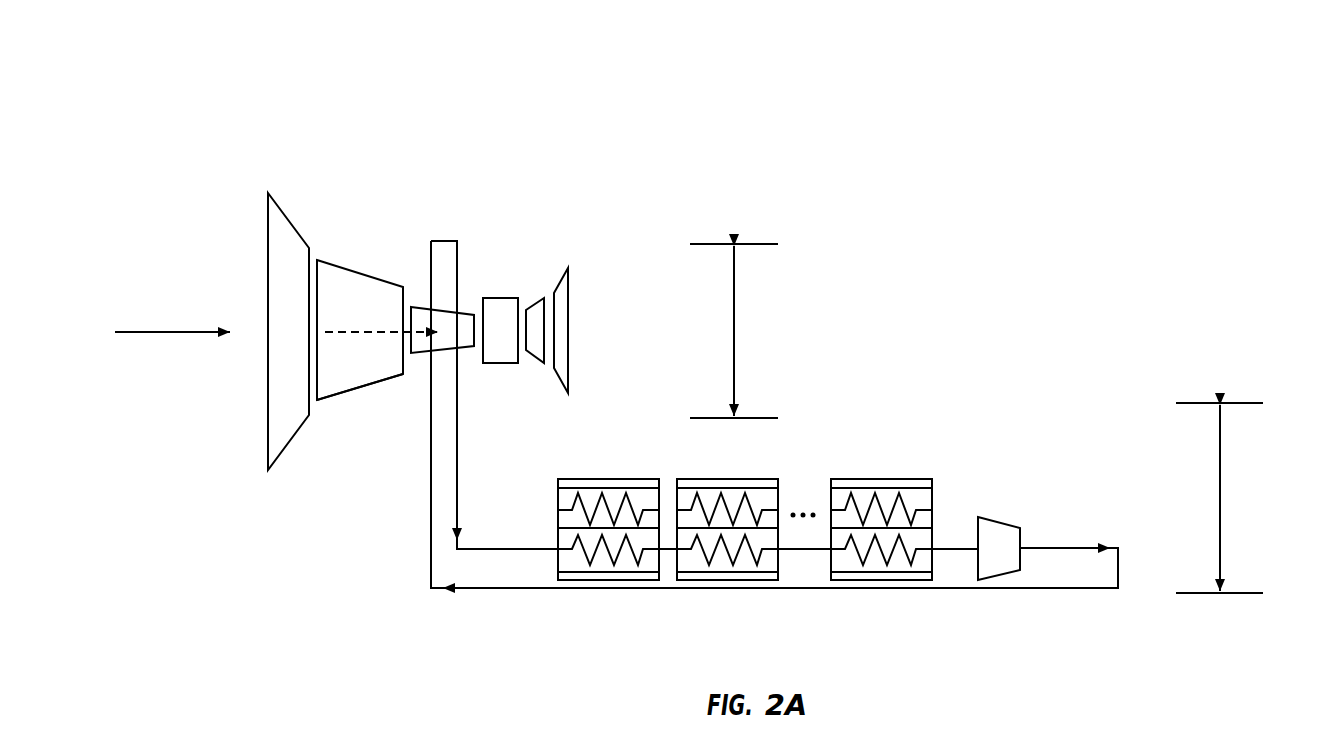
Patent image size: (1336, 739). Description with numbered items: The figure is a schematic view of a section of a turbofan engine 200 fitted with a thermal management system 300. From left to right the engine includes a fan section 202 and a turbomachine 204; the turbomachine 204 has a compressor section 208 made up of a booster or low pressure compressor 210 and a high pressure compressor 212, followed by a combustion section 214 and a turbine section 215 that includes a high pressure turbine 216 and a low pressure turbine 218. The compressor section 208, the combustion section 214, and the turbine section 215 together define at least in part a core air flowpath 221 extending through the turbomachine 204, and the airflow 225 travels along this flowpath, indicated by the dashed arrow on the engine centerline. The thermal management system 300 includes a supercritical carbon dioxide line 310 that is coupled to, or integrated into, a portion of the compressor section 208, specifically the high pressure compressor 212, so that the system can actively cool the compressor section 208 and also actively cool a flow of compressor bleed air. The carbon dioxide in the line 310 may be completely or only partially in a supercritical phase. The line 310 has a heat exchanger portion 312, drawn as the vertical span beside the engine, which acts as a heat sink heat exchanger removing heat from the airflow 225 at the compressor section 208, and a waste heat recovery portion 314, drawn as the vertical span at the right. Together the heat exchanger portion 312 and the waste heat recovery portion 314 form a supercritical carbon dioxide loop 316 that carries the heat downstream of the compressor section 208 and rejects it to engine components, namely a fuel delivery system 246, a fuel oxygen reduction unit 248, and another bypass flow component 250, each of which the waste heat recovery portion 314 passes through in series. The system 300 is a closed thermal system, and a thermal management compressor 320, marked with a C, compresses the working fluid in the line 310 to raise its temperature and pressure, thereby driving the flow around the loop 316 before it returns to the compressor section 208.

The turbofan engine 200 is at (682, 70).
The fan section 202 is at (268, 300).
The turbomachine 204 is at (463, 122).
The compressor section 208 is at (394, 245).
The low pressure compressor 210 is at (357, 390).
The high pressure compressor 212 is at (420, 357).
The combustion section 214 is at (500, 363).
The turbine section 215 is at (578, 240).
The high pressure turbine 216 is at (535, 310).
The low pressure turbine 218 is at (568, 335).
The core air flowpath 221 is at (142, 330).
The airflow 225 is at (365, 330).
The fuel delivery system 246 is at (615, 479).
The fuel oxygen reduction unit 248 is at (745, 479).
The bypass flow component 250 is at (880, 478).
The thermal management system 300 is at (972, 388).
The supercritical carbon dioxide line 310 is at (457, 265).
The heat exchanger portion 312 is at (734, 325).
The waste heat recovery portion 314 is at (1220, 495).
The supercritical carbon dioxide loop 316 is at (382, 640).
The thermal management compressor 320 is at (1000, 520).